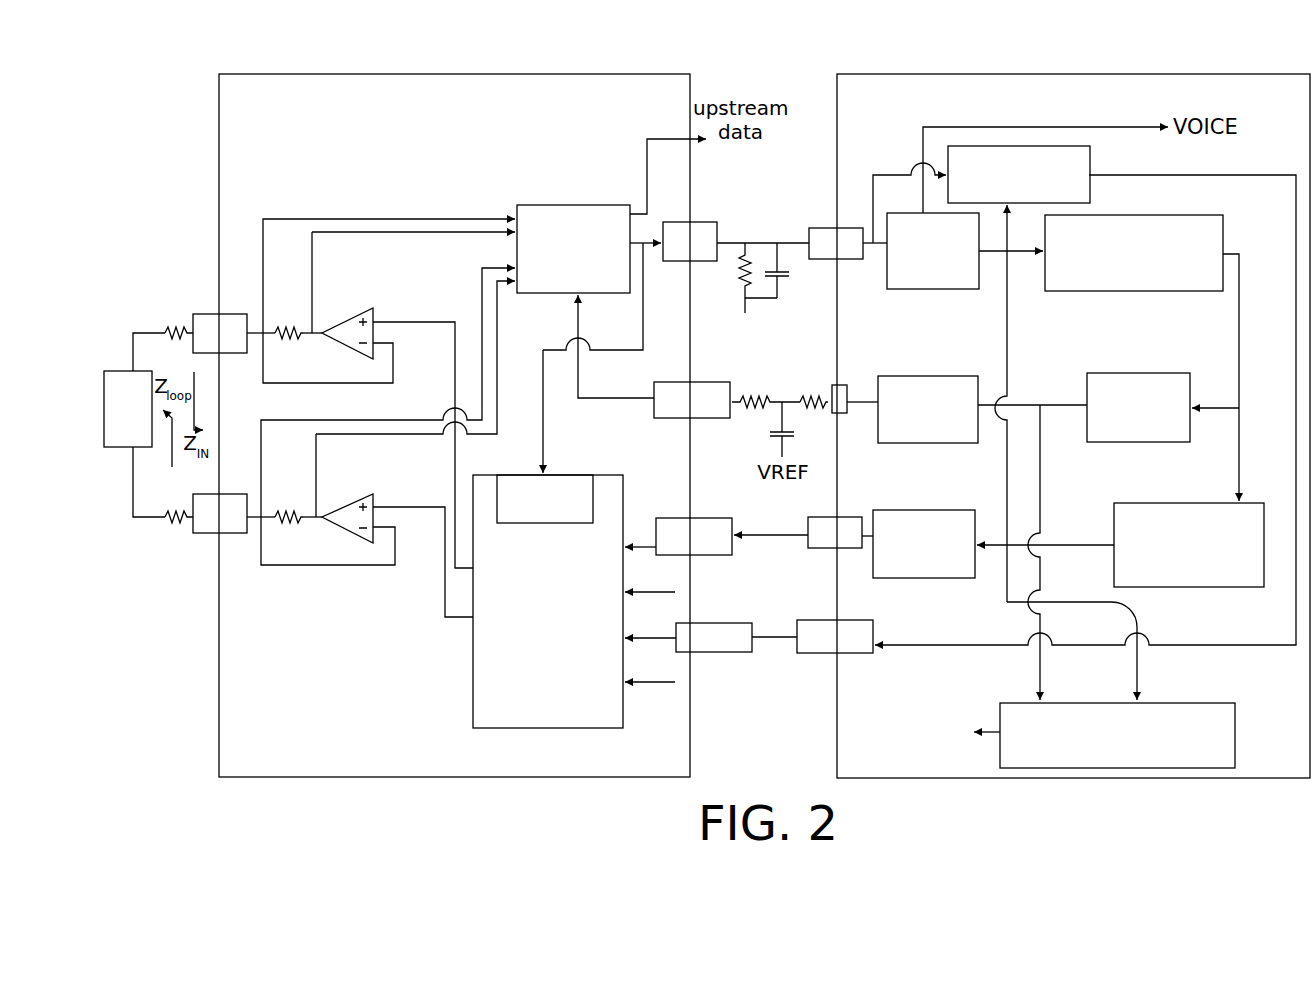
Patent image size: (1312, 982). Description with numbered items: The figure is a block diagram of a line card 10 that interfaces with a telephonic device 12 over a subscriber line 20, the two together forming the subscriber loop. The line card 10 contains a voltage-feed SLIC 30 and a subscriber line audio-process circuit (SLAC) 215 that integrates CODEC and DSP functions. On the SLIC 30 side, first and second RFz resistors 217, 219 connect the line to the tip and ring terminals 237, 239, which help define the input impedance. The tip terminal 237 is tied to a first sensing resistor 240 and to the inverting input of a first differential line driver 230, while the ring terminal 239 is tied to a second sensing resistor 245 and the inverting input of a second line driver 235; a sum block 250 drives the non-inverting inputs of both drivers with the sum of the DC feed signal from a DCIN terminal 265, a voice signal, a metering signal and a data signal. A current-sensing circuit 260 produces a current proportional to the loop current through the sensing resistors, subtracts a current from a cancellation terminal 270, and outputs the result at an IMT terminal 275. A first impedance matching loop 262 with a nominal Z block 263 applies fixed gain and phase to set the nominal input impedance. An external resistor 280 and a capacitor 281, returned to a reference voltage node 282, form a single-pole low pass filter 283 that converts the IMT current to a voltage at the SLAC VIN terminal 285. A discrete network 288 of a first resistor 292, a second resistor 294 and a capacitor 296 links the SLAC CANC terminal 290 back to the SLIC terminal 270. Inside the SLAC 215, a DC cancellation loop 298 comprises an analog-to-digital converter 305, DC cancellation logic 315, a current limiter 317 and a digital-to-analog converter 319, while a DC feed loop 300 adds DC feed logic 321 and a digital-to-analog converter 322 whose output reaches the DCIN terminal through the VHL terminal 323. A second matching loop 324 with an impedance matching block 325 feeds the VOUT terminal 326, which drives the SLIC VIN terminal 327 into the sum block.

The line card 10 is at (1164, 803).
The telephonic device 12 is at (140, 448).
The subscriber line 20 is at (143, 330).
The SLIC 30 is at (458, 775).
The subscriber line audio-process circuit (SLAC) 215 is at (1057, 778).
The first RFz resistor 217 is at (175, 328).
The second RFz resistor 219 is at (178, 530).
The first differential line driver 230 is at (374, 313).
The second differential line driver 235 is at (377, 497).
The tip terminal 237 is at (212, 313).
The ring terminal 239 is at (212, 494).
The first sensing resistor 240 is at (291, 327).
The second sensing resistor 245 is at (290, 513).
The sum block 250 is at (473, 627).
The current-sensing circuit 260 is at (537, 205).
The first impedance matching loop 262 is at (537, 408).
The nominal Z block 263 is at (497, 485).
The DCIN terminal 265 is at (705, 557).
The cancellation (CANC) terminal 270 is at (680, 420).
The IMT terminal 275 is at (707, 221).
The external resistor 280 is at (738, 263).
The capacitor 281 is at (785, 278).
The reference voltage node 282 is at (762, 333).
The single-pole low pass filter 283 is at (757, 230).
The VIN terminal 285 is at (829, 227).
The discrete network 288 is at (750, 445).
The CANC terminal of the SLAC 290 is at (839, 383).
The first resistor 292 is at (748, 394).
The second resistor 294 is at (822, 405).
The capacitor 296 is at (790, 438).
The DC cancellation loop 298 is at (1116, 346).
The DC feed loop 300 is at (1218, 445).
The analog-to-digital converter 305 is at (930, 290).
The DC cancellation logic 315 is at (1110, 292).
The current limiter 317 is at (1115, 443).
The digital-to-analog converter 319 is at (900, 444).
The DC feed logic 321 is at (1158, 501).
The digital-to-analog converter 322 is at (953, 579).
The VHL terminal 323 is at (828, 550).
The second matching loop 324 is at (1182, 190).
The impedance matching block 325 is at (1093, 167).
The VOUT terminal 326 is at (823, 655).
The VIN terminal of the SLIC 327 is at (710, 652).